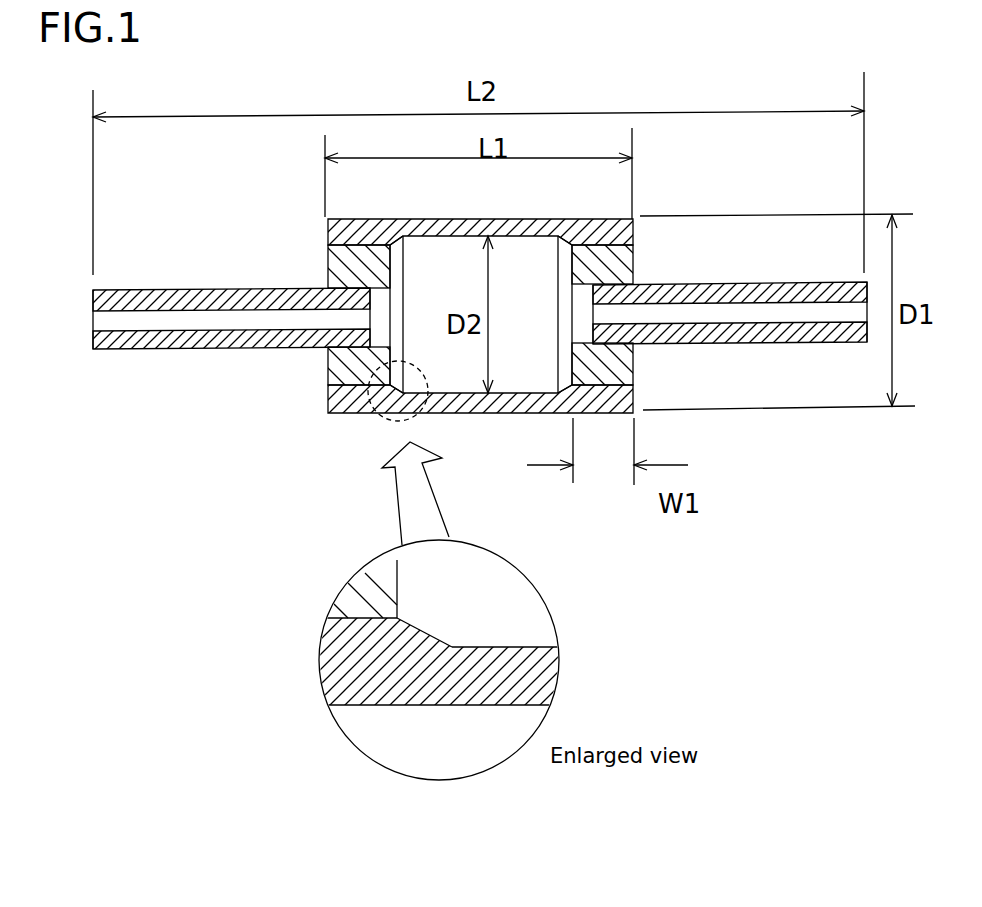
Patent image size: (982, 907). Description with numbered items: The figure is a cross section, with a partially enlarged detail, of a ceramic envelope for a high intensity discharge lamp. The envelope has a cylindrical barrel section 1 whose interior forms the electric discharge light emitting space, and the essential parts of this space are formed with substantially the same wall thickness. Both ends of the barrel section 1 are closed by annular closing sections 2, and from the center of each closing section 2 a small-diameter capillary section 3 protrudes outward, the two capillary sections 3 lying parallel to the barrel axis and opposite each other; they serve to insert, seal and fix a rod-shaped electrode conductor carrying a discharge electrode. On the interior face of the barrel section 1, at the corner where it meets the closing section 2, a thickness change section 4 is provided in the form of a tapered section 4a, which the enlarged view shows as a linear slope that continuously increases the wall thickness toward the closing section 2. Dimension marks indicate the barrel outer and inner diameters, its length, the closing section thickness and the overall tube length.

The cylindrical barrel section 1 is at (328, 228).
The annular closing section 2 is at (327, 266).
The capillary section 3 is at (196, 290).
The thickness change section 4 is at (404, 260).
The tapered section 4a is at (420, 632).